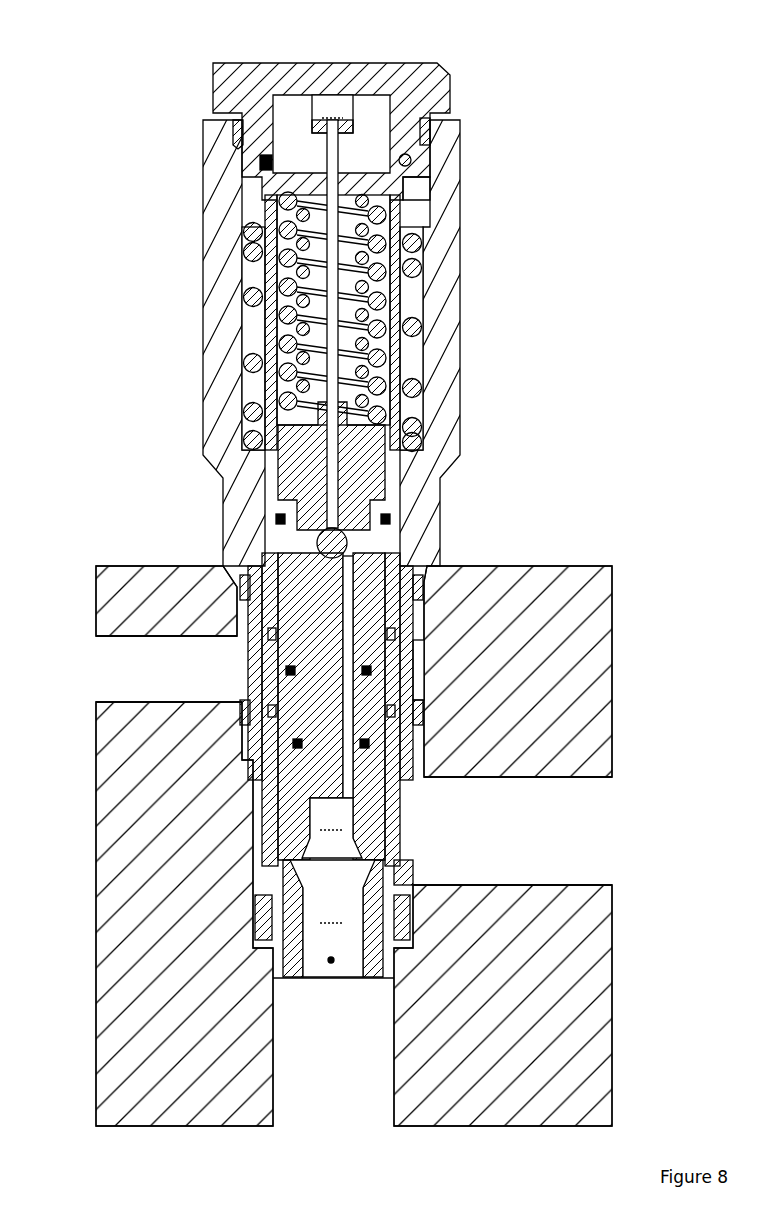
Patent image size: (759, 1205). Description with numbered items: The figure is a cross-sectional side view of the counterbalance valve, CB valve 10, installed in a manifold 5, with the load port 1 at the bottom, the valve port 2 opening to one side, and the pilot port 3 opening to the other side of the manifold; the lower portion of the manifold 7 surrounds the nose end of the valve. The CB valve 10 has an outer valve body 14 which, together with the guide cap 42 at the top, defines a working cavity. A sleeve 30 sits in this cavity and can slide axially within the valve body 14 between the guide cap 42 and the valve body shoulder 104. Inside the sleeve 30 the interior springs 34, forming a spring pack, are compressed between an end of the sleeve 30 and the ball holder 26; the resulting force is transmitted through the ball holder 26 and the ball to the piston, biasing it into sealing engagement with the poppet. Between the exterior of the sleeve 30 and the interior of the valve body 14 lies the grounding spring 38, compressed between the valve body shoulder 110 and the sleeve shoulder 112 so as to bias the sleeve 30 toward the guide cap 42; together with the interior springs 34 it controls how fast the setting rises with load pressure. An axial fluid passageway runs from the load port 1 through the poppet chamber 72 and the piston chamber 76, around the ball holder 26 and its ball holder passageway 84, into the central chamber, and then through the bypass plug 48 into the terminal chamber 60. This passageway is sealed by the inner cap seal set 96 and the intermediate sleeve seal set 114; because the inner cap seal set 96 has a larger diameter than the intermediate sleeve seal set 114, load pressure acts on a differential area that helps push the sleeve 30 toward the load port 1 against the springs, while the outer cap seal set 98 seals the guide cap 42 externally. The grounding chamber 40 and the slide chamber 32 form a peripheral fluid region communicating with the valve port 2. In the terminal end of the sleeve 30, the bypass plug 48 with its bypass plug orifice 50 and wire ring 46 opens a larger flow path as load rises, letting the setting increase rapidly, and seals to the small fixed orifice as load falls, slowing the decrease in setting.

The load port 1 is at (335, 985).
The valve port 2 is at (413, 835).
The pilot port 3 is at (250, 662).
The manifold 5 is at (575, 657).
The housing block lower portion 7 is at (155, 960).
The CB valve 10 is at (656, 873).
The valve body 14 is at (445, 255).
The ball holder 26 is at (305, 478).
The sleeve 30 is at (270, 210).
The slide chamber 32 is at (278, 520).
The interior springs 34 is at (262, 375).
The grounding spring 38 is at (250, 295).
The grounding chamber 40 is at (255, 323).
The guide cap 42 is at (420, 72).
The wire ring 46 is at (432, 190).
The bypass plug 48 is at (237, 125).
The bypass plug orifice 50 is at (327, 150).
The terminal chamber 60 is at (332, 114).
The poppet chamber 72 is at (332, 918).
The piston chamber 76 is at (332, 828).
The ball holder passageway 84 is at (420, 470).
The inner cap seal set 96 is at (412, 162).
The outer cap seal set 98 is at (432, 130).
The valve body shoulder 104 is at (270, 575).
The valve body shoulder for grounding spring 110 is at (250, 420).
The sleeve shoulder 112 is at (250, 250).
The intermediate sleeve seal set 114 is at (270, 547).